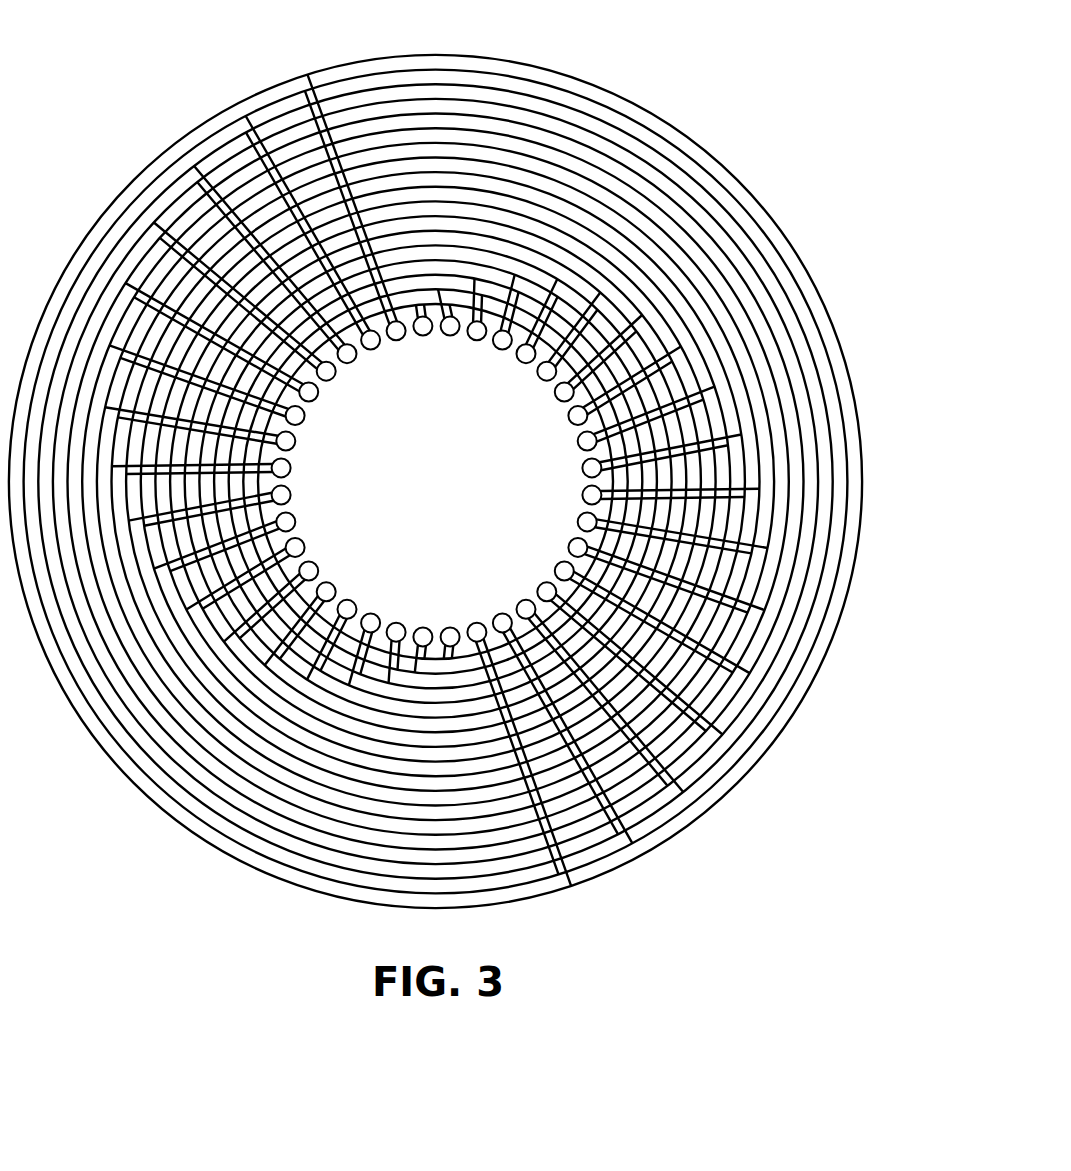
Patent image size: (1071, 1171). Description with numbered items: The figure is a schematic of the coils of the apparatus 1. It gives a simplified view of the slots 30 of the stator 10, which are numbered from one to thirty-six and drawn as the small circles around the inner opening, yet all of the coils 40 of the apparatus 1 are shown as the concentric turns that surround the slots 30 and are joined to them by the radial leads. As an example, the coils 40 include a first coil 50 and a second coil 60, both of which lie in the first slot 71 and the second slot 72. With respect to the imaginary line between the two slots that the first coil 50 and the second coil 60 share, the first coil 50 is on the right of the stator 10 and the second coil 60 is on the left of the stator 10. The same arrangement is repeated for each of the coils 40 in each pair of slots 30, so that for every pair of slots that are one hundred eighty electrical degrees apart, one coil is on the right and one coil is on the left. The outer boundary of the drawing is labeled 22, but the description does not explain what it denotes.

The apparatus 1 is at (170, 118).
The stator 10 is at (393, 610).
The outer edge of substrate 22 is at (732, 802).
The slots 30 is at (314, 416).
The coils 40 is at (650, 112).
The first coil 50 is at (436, 300).
The second coil 60 is at (389, 346).
The first slot 71 is at (423, 340).
The second slot 72 is at (454, 622).